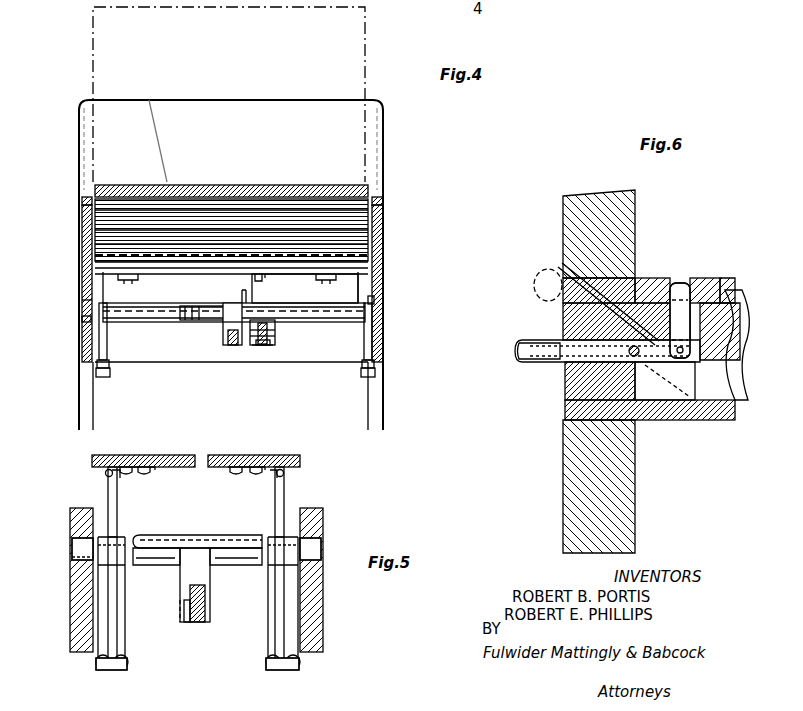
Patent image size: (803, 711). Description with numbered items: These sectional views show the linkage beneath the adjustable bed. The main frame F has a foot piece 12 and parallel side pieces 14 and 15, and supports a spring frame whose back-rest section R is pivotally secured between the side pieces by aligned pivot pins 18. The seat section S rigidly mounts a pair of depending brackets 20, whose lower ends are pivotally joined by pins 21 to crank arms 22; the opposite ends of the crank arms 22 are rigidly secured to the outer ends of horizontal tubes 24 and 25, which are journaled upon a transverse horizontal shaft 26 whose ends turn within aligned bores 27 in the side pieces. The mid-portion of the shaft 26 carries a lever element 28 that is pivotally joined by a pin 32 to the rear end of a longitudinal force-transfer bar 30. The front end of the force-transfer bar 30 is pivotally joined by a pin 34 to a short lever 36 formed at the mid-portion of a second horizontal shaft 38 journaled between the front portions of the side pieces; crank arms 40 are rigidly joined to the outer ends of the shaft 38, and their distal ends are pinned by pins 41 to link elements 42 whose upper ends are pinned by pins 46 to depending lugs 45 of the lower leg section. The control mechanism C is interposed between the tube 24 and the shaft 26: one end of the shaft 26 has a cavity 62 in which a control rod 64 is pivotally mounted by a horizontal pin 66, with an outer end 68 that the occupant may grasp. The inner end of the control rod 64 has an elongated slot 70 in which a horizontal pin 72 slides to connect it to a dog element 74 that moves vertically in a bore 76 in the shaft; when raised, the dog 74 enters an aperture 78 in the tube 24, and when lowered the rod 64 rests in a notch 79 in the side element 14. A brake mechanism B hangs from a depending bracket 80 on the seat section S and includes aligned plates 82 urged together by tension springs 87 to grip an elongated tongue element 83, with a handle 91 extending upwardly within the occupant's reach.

In FIG. 4, the foot piece 12 is at (385, 148).
In FIG. 4, the back-rest section R is at (341, 183).
In FIG. 4, the pivot pins 18 is at (82, 203).
In FIG. 4, the side piece 14 is at (82, 242).
In FIG. 5, the side piece 14 is at (72, 612).
In FIG. 6, the side piece 14 is at (568, 470).
In FIG. 4, the side piece 15 is at (386, 231).
In FIG. 5, the side piece 15 is at (324, 622).
In FIG. 4, the handle 91 is at (384, 258).
In FIG. 4, the seat section S is at (318, 275).
In FIG. 4, the depending bracket 80 is at (258, 297).
In FIG. 4, the tube 24 is at (152, 304).
In FIG. 6, the tube 24 is at (650, 278).
In FIG. 4, the horizontal shaft 26 is at (206, 322).
In FIG. 6, the horizontal shaft 26 is at (724, 412).
In FIG. 4, the tension springs 87 is at (242, 292).
In FIG. 4, the lever element 28 is at (228, 335).
In FIG. 4, the pin 32 is at (235, 346).
In FIG. 4, the force-transfer bar 30 is at (259, 346).
In FIG. 5, the force-transfer bar 30 is at (197, 622).
In FIG. 4, the brake mechanism B is at (278, 332).
In FIG. 4, the plates 82 is at (276, 336).
In FIG. 4, the tongue element 83 is at (266, 346).
In FIG. 4, the depending brackets 20 is at (98, 291).
In FIG. 4, the crank arms 22 is at (110, 364).
In FIG. 4, the pins 21 is at (99, 375).
In FIG. 4, the control mechanism C is at (75, 308).
In FIG. 6, the control mechanism C is at (712, 278).
In FIG. 4, the outer end of control rod 68 is at (82, 320).
In FIG. 6, the outer end of control rod 68 is at (520, 356).
In FIG. 4, the tube 25 is at (385, 300).
In FIG. 4, the main frame F is at (393, 389).
In FIG. 5, the depending lugs 45 is at (142, 476).
In FIG. 5, the pins 46 is at (105, 473).
In FIG. 5, the link elements 42 is at (108, 497).
In FIG. 5, the crank arms 40 is at (80, 652).
In FIG. 5, the pins 41 is at (100, 668).
In FIG. 5, the horizontal shaft 38 is at (168, 535).
In FIG. 5, the short lever 36 is at (185, 560).
In FIG. 5, the pin 34 is at (195, 625).
In FIG. 6, the dog element 74 is at (732, 286).
In FIG. 6, the horizontal pin 72 is at (678, 400).
In FIG. 6, the aperture 78 is at (680, 284).
In FIG. 6, the bore 76 is at (715, 340).
In FIG. 6, the control rod 64 is at (590, 350).
In FIG. 6, the horizontal pin 66 is at (626, 345).
In FIG. 6, the notch 79 is at (560, 288).
In FIG. 6, the bores 27 is at (572, 392).
In FIG. 6, the cavity 62 is at (650, 392).
In FIG. 6, the slot 70 is at (690, 402).